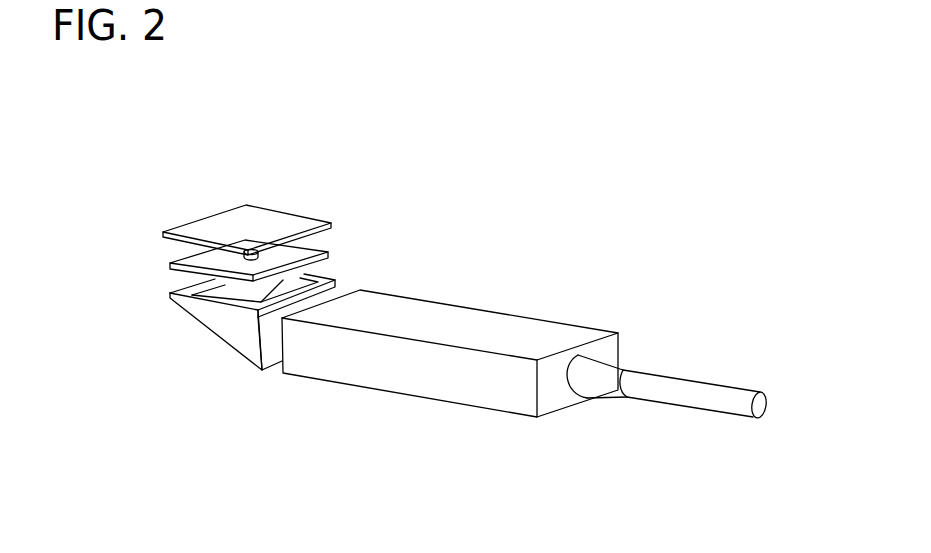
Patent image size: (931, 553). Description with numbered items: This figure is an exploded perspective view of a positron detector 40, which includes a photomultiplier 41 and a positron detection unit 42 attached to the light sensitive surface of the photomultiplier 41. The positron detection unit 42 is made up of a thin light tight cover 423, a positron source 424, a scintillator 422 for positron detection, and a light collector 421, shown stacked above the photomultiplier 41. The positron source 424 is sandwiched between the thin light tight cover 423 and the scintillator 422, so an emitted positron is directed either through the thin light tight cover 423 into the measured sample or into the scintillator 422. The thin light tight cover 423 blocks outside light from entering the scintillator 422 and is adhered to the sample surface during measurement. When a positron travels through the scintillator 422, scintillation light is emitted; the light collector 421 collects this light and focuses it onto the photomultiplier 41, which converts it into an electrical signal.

The positron detector 40 is at (280, 113).
The photomultiplier 41 is at (419, 313).
The positron detection unit 42 is at (410, 154).
The light collector 421 is at (340, 289).
The scintillator 422 is at (307, 253).
The thin light tight cover 423 is at (225, 222).
The positron source 424 is at (255, 246).